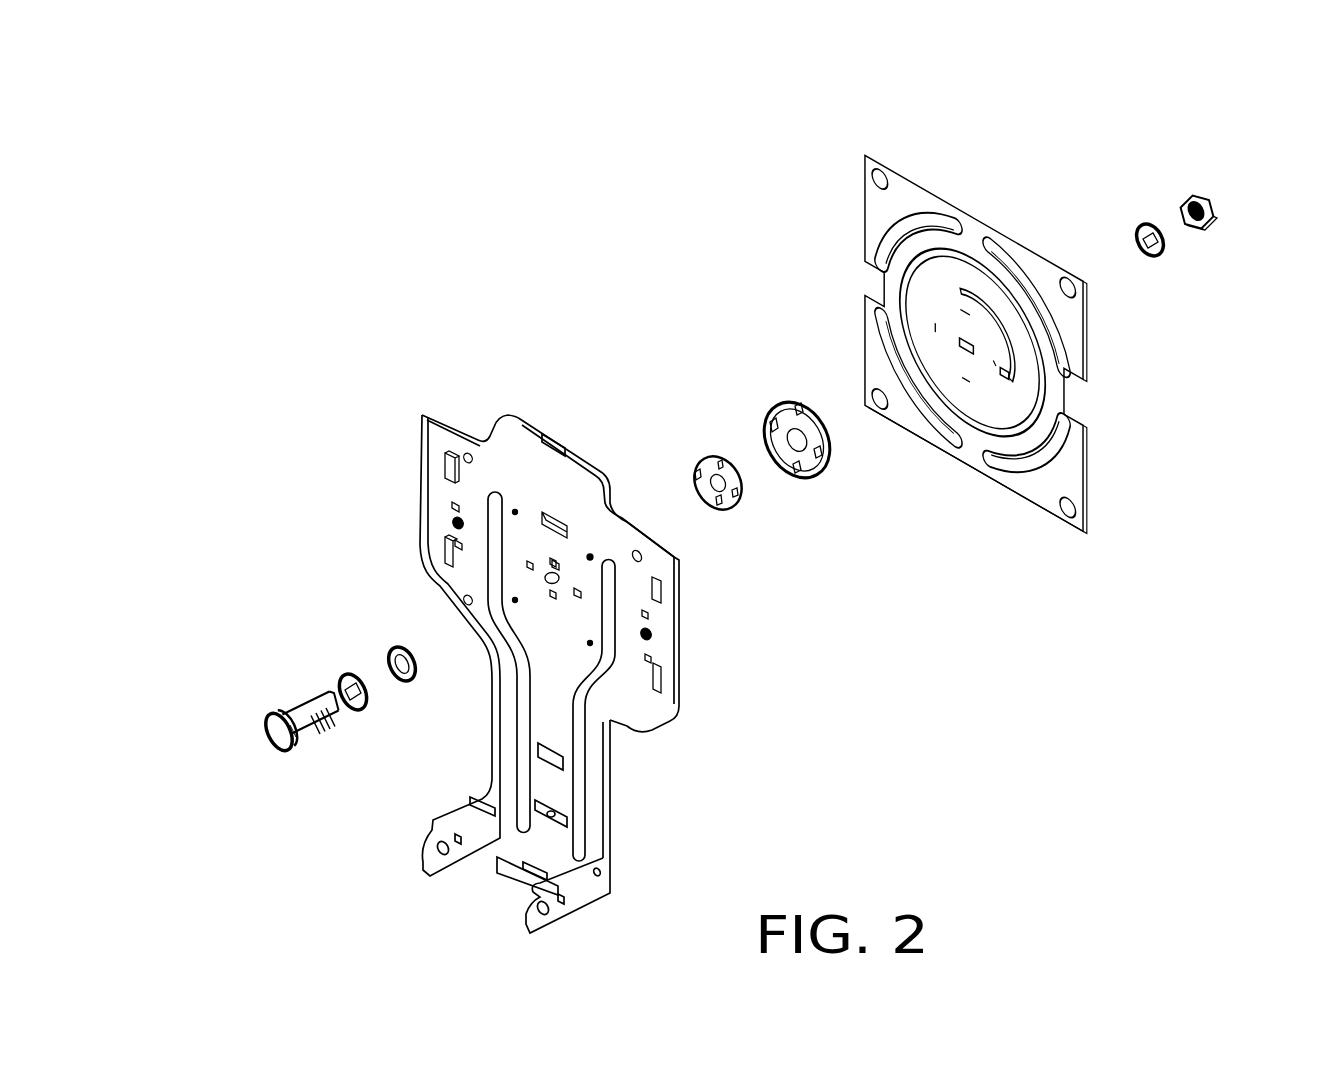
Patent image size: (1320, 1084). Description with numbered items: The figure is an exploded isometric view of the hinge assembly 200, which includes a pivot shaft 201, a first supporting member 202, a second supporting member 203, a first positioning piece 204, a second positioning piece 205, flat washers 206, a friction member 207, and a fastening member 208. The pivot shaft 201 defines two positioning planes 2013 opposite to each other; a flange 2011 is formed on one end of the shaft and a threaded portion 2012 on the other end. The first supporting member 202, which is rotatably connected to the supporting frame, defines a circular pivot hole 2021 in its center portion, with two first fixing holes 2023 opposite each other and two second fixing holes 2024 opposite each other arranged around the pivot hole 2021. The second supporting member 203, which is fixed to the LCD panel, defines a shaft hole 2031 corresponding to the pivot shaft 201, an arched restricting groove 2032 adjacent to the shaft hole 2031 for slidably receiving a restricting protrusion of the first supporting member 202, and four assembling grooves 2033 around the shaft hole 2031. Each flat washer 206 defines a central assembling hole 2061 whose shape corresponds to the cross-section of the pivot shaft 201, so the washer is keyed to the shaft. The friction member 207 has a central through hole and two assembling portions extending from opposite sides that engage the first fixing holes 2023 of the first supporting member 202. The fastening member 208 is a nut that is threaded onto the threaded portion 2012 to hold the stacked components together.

The hinge assembly 200 is at (584, 167).
The pivot shaft 201 is at (269, 702).
The flange 2011 is at (281, 743).
The threaded portion 2012 is at (322, 722).
The positioning planes 2013 is at (299, 716).
The first supporting member 202 is at (406, 396).
The pivot hole 2021 is at (557, 577).
The first fixing holes 2023 is at (557, 563).
The second fixing holes 2024 is at (577, 593).
The second supporting member 203 is at (846, 170).
The shaft hole 2031 is at (977, 340).
The restricting groove 2032 is at (1012, 370).
The assembling grooves 2033 is at (963, 380).
The first positioning piece 204 is at (700, 462).
The second positioning piece 205 is at (772, 403).
The flat washer 206 is at (354, 710).
The assembling hole 2061 is at (345, 678).
The friction member 207 is at (392, 652).
The fastening member 208 is at (1195, 193).